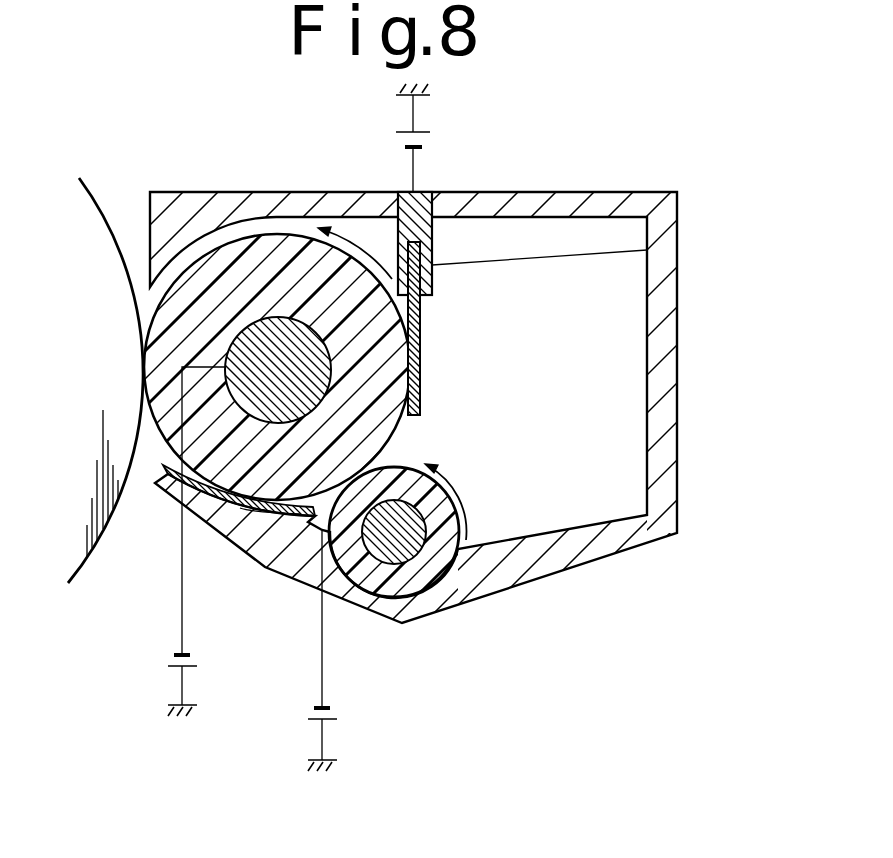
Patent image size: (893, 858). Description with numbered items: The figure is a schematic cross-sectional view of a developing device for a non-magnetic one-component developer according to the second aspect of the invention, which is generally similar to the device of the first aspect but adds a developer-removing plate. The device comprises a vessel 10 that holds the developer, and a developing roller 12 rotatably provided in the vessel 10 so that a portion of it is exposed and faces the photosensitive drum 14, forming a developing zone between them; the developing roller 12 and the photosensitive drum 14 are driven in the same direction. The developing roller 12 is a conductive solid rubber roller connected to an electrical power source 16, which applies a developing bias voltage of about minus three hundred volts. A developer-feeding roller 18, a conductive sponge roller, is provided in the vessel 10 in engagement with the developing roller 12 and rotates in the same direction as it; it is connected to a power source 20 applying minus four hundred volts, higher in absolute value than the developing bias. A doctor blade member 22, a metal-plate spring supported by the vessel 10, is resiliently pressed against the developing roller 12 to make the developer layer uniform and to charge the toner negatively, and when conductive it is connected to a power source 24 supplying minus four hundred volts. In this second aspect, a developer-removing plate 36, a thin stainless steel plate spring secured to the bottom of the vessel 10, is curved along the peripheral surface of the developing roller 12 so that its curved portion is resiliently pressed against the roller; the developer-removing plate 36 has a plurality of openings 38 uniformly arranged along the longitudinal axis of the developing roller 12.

The vessel 10 is at (690, 323).
The developing roller 12 is at (409, 440).
The photosensitive drum 14 is at (104, 182).
The electrical power source 16 is at (165, 660).
The developer-feeding roller 18 is at (472, 523).
The electrical power source 20 is at (305, 719).
The doctor blade member 22 is at (420, 333).
The electrical power source 24 is at (425, 131).
The developer-removing plate 36 is at (211, 508).
The openings 38 is at (306, 518).